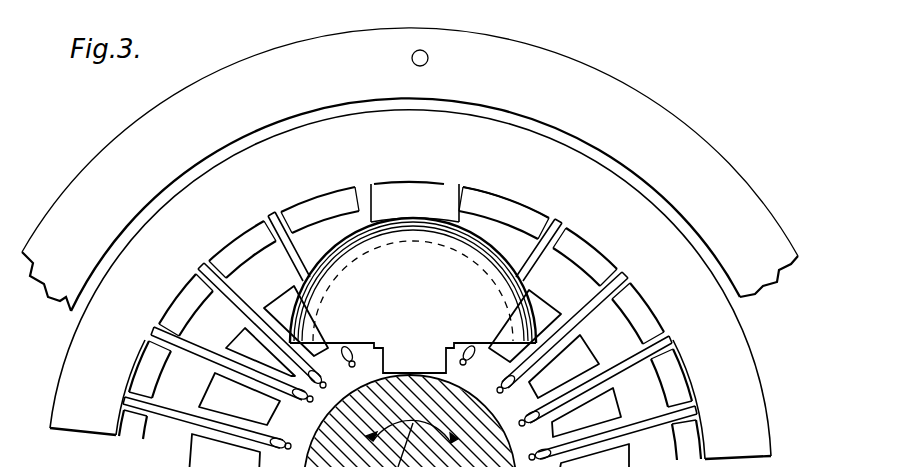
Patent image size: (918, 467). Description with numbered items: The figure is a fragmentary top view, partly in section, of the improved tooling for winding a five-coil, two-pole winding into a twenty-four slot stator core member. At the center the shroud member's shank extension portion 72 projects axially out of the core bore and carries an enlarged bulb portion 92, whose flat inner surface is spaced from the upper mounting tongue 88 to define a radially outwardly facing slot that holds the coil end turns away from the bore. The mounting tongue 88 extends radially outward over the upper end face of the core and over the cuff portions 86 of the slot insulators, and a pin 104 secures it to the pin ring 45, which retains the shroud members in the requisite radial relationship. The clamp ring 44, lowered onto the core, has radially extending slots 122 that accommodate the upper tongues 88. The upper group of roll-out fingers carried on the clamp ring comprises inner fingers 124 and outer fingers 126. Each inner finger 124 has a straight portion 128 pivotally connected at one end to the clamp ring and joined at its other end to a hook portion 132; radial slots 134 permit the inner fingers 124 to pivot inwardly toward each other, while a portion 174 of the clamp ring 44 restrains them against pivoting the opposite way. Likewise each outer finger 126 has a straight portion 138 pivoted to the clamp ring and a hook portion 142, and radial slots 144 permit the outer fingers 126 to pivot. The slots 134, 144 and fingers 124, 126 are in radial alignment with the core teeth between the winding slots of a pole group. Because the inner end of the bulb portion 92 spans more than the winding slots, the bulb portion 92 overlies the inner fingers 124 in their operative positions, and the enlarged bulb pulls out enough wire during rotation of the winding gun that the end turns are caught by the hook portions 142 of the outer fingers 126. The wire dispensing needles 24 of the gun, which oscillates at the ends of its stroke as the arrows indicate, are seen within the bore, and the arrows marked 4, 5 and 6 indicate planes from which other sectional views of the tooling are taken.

The section line 4- 4 is at (422, 8).
The section line 5- 5 is at (648, 84).
The section line 6- 6 is at (800, 256).
The wire dispensing needles 24 is at (478, 388).
The clamp ring 44 is at (757, 393).
The pin ring 45 is at (739, 193).
The shank extension portion 72 is at (410, 368).
The cuff portions 86 is at (190, 453).
The mounting tongue 88 is at (410, 321).
The bulb portion 92 is at (413, 280).
The pins 104 is at (428, 58).
The radially extending slots 122 is at (464, 197).
The inner roll-out fingers 124 is at (270, 217).
The outer roll-out fingers 126 is at (157, 325).
The straight portions 128 is at (599, 302).
The hook portions 132 is at (399, 355).
The radial slots 134 is at (610, 270).
The straight portions 138 is at (616, 455).
The hook portions 142 is at (540, 448).
The radial slots 144 is at (655, 323).
The portion of clamp ring 174 is at (703, 368).